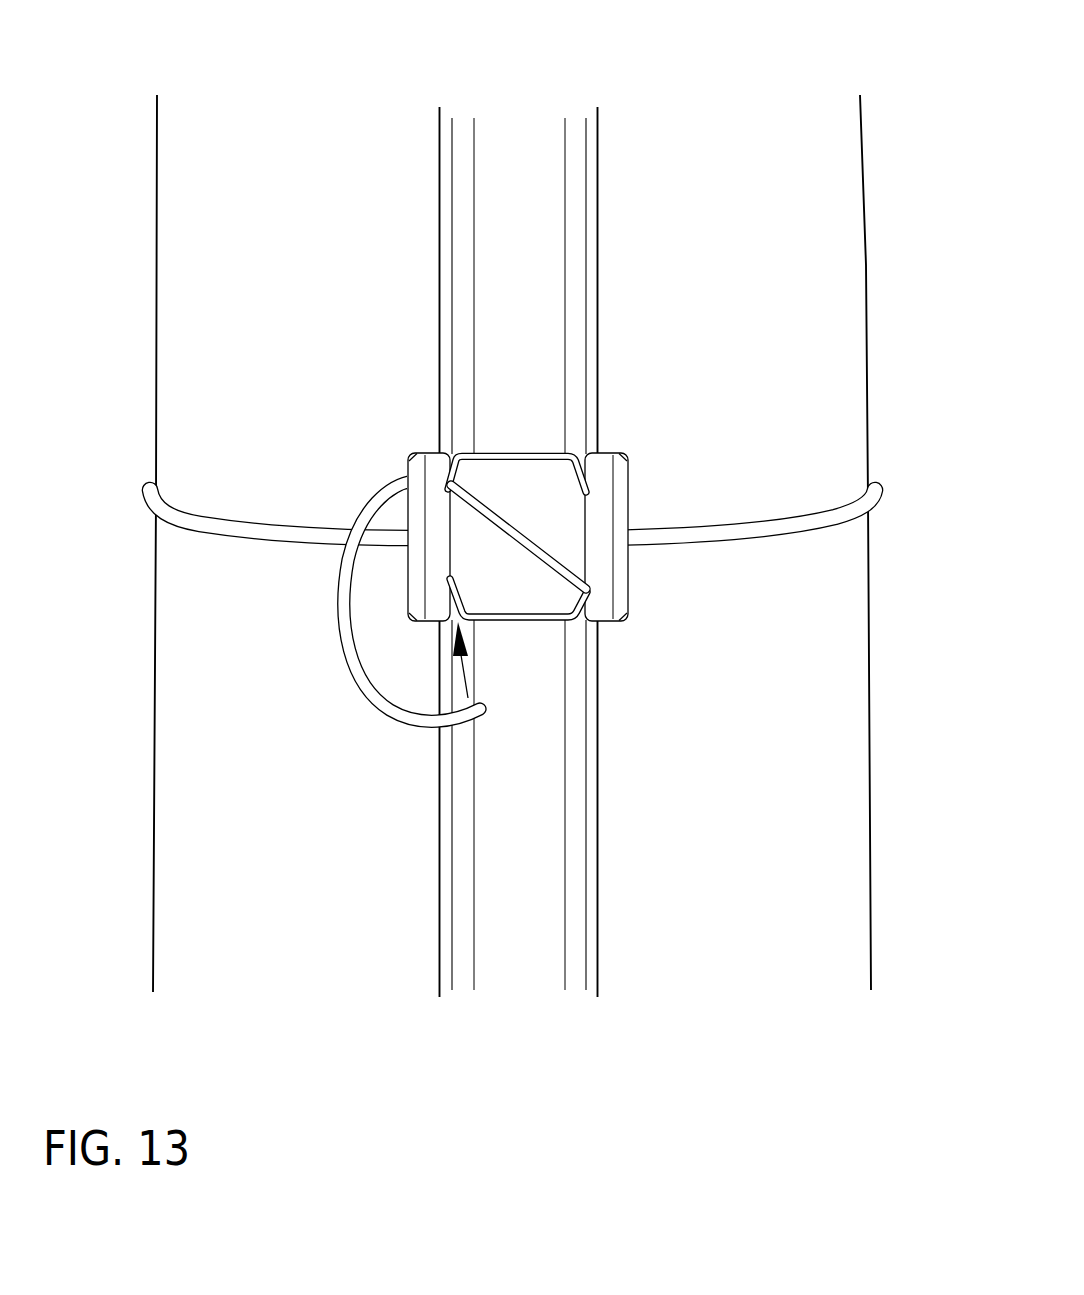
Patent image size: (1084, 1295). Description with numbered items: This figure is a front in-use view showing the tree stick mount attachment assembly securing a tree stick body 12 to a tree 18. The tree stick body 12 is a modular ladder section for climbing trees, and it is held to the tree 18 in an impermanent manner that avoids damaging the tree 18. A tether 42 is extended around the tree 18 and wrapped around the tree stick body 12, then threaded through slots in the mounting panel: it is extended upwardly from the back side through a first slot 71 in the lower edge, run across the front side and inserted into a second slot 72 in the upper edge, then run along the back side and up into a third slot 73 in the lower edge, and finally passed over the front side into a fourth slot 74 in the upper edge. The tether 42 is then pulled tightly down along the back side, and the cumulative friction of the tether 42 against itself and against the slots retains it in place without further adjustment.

The tree stick body 12 is at (578, 168).
The tree 18 is at (830, 250).
The tether 42 is at (842, 519).
The first slot 71 is at (630, 592).
The second slot 72 is at (458, 485).
The third slot 73 is at (450, 580).
The fourth slot 74 is at (630, 488).